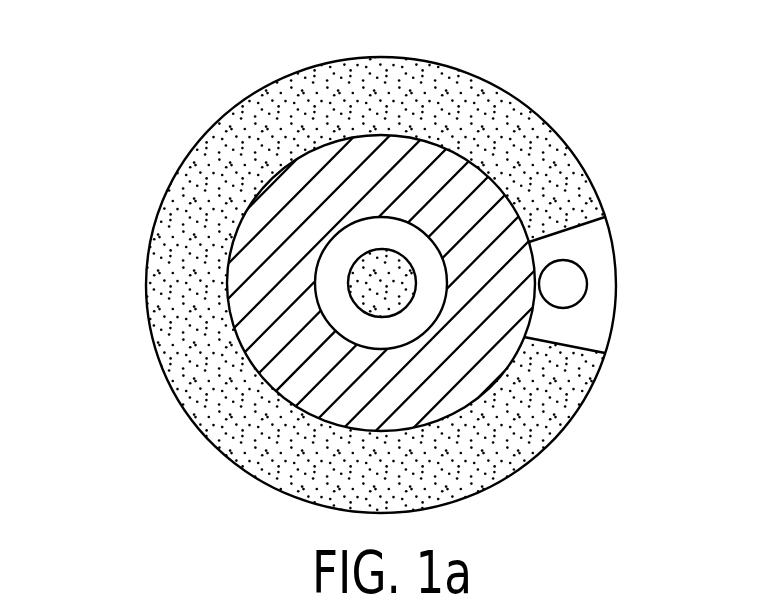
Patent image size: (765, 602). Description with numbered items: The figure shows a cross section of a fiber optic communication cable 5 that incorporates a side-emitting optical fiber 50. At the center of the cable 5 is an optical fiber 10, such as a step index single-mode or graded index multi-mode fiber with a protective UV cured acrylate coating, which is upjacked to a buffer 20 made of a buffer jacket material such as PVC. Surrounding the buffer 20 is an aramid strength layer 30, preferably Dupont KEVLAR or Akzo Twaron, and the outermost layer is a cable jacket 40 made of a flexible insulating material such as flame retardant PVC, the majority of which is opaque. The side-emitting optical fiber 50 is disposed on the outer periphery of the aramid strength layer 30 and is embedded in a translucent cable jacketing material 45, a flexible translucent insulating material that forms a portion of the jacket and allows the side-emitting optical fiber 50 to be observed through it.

The fiber optic communication cable 5 is at (382, 258).
The optical fiber 10 is at (383, 317).
The buffer 20 is at (316, 300).
The aramid strength layer 30 is at (272, 221).
The cable jacket 40 is at (237, 100).
The translucent cable jacketing material 45 is at (587, 332).
The side-emitting optical fiber 50 is at (580, 277).